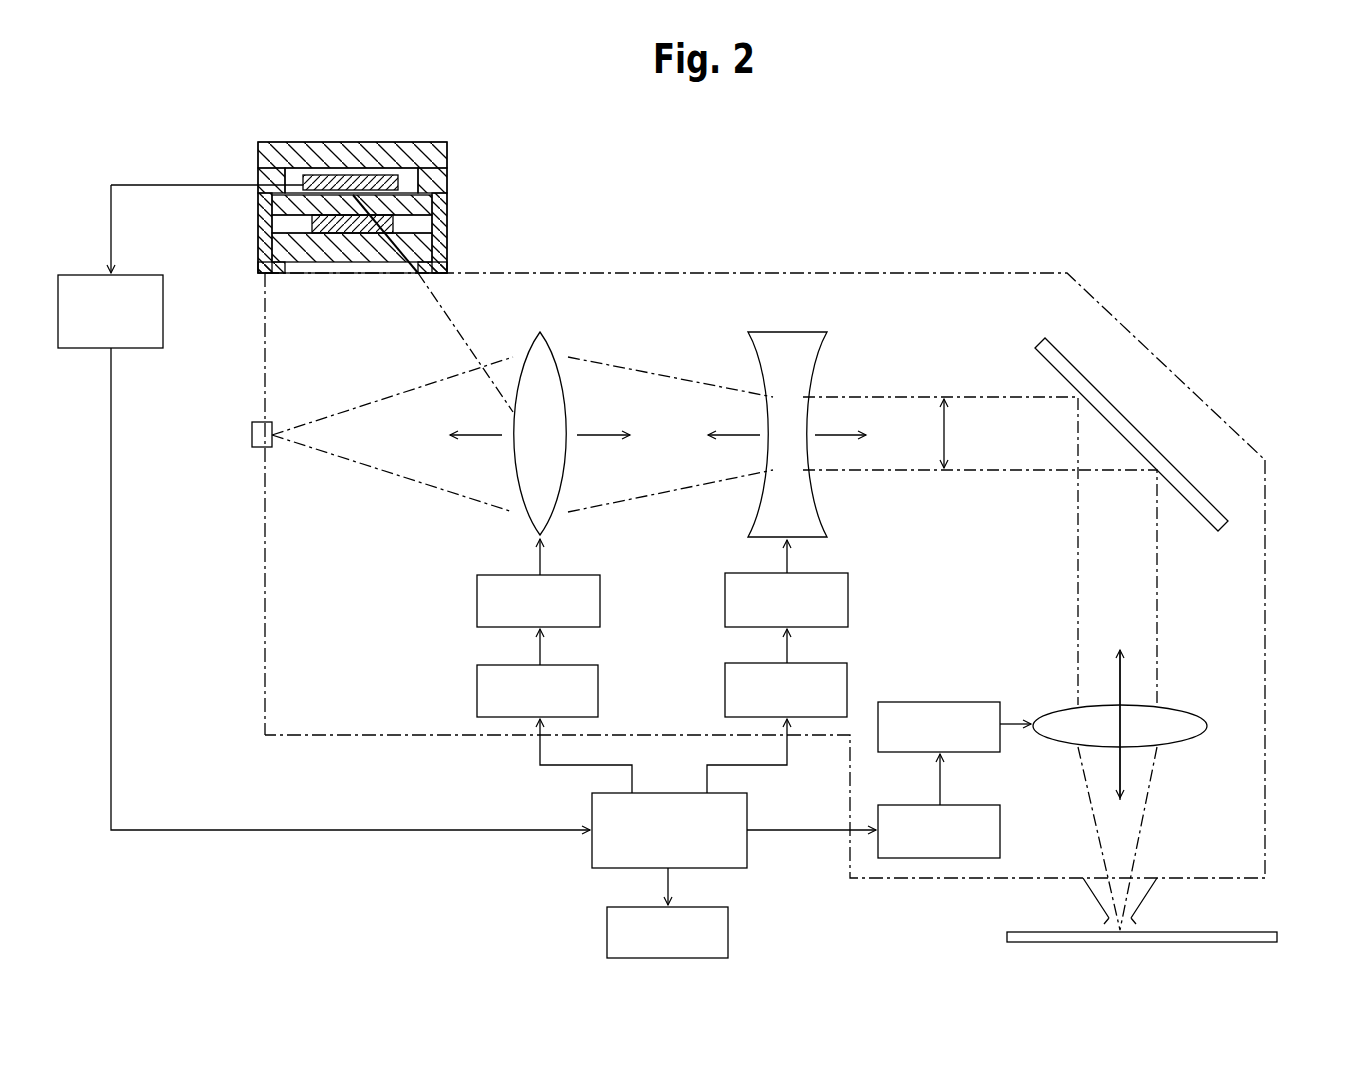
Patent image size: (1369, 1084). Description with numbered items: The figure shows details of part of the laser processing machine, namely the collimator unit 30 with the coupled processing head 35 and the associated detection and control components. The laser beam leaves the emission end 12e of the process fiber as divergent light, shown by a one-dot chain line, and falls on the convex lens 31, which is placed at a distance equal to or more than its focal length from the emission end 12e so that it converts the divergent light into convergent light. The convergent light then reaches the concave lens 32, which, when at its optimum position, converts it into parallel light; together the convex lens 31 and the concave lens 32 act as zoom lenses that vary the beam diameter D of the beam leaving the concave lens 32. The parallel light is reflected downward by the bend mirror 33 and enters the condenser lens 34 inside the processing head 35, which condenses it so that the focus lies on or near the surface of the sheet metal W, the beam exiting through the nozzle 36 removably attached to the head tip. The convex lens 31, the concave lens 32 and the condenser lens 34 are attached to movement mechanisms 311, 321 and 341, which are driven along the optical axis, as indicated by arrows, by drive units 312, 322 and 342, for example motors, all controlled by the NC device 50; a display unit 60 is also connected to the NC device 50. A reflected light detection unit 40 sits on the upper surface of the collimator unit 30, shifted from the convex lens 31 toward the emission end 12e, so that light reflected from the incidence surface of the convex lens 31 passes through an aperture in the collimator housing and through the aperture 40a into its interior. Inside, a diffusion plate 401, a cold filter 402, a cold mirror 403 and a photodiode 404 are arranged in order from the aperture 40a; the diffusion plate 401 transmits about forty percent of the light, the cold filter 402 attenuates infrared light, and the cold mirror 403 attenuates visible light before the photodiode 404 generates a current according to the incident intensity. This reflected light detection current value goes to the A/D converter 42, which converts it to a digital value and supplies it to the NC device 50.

The collimator unit 30 is at (950, 273).
The processing head 35 is at (1265, 775).
The reflected light detection unit 40 is at (420, 142).
The aperture 40a is at (290, 273).
The diffusion plate 401 is at (420, 247).
The cold filter 402 is at (395, 226).
The cold mirror 403 is at (430, 205).
The photodiode 404 is at (398, 180).
The A/D converter 42 is at (156, 275).
The emission end 12e is at (262, 422).
The convex lens 31 is at (542, 332).
The concave lens 32 is at (790, 332).
The beam diameter D is at (955, 433).
The bend mirror 33 is at (1082, 377).
The condenser lens 34 is at (1192, 708).
The nozzle 36 is at (1085, 898).
The sheet metal W is at (1232, 932).
The movement mechanism 311 is at (600, 600).
The drive unit 312 is at (598, 685).
The movement mechanism 321 is at (848, 600).
The drive unit 322 is at (847, 685).
The movement mechanism 341 is at (975, 702).
The drive unit 342 is at (975, 805).
The NC device 50 is at (747, 810).
The display unit 60 is at (728, 935).